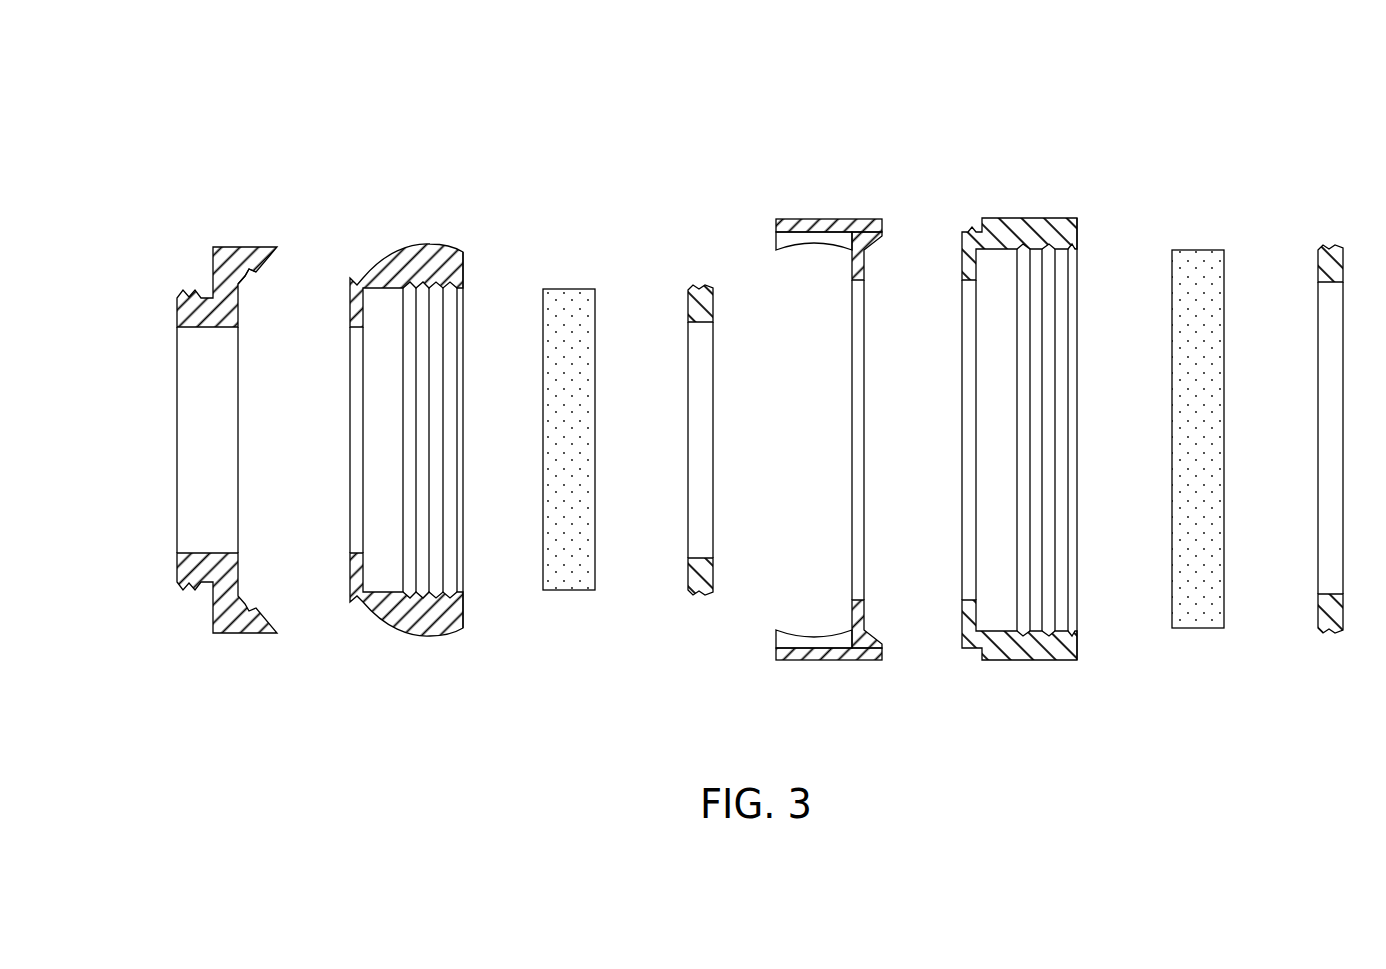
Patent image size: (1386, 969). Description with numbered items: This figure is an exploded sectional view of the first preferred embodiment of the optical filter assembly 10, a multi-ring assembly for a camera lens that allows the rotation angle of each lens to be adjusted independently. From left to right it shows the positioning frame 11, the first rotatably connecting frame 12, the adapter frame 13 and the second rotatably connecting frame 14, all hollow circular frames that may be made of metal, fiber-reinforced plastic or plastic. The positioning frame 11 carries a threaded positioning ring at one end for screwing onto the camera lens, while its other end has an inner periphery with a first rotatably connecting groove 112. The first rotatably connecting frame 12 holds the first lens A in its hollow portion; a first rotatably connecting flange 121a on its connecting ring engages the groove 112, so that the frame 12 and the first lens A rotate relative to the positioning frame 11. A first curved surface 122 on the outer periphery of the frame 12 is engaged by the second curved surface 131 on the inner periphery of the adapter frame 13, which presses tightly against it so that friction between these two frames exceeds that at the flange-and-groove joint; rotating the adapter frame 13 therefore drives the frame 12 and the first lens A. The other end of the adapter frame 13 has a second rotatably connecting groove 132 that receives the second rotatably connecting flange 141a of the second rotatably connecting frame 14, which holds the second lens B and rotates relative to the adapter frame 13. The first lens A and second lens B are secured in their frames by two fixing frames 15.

The optical filter assembly 10 is at (207, 100).
The positioning frame 11 is at (237, 388).
The first rotatably connecting groove 112 is at (247, 282).
The first rotatably connecting frame 12 is at (397, 389).
The first rotatably connecting flange 121a is at (352, 278).
The first curved surface 122 is at (393, 246).
The first lens A is at (568, 305).
The fixing frame 15 is at (707, 276).
The adapter frame 13 is at (847, 388).
The second curved surface 131 is at (806, 252).
The second rotatably connecting groove 132 is at (870, 247).
The second rotatably connecting frame 14 is at (1013, 388).
The second rotatably connecting flange 141a is at (965, 232).
The second lens B is at (1196, 282).